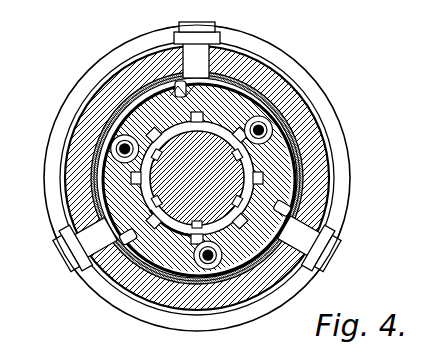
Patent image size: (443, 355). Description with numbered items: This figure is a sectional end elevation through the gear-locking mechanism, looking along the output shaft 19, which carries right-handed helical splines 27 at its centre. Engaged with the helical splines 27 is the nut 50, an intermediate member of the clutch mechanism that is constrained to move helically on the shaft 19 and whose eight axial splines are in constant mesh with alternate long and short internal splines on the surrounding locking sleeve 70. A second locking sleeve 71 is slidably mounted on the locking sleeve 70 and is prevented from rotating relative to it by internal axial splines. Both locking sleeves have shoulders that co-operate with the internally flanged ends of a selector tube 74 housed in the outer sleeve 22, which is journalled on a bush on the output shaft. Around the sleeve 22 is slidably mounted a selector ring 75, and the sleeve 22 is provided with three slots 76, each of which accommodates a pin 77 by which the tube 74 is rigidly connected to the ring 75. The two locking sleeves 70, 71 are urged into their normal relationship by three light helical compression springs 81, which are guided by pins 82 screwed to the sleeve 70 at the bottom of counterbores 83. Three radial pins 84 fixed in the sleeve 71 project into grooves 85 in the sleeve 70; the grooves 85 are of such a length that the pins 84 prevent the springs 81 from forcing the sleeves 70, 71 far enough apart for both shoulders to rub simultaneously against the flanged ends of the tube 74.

The shaft 19 is at (172, 222).
The sleeve 22 is at (304, 111).
The helical splines 27 is at (262, 276).
The nut 50 is at (265, 97).
The locking sleeve 70 is at (300, 220).
The second locking sleeve 71 is at (282, 205).
The selector tube 74 is at (296, 153).
The selector ring 75 is at (279, 71).
The slots 76 is at (218, 56).
The pin 77 is at (200, 24).
The helical compression springs 81 is at (117, 142).
The pins 82 is at (116, 146).
The counterbores 83 is at (123, 138).
The radial pins 84 is at (178, 84).
The grooves 85 is at (176, 84).